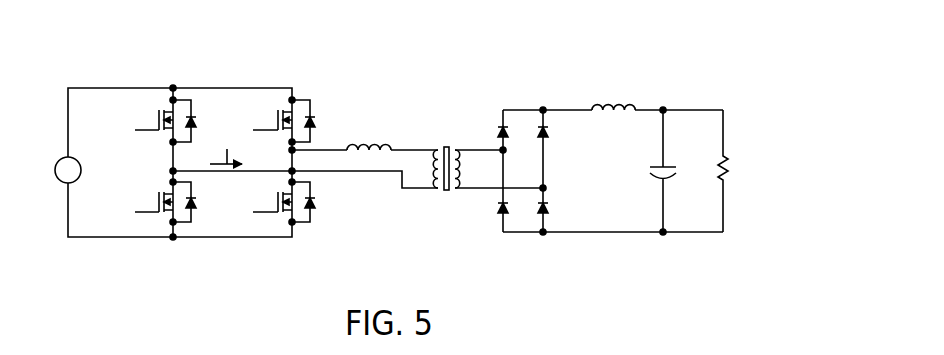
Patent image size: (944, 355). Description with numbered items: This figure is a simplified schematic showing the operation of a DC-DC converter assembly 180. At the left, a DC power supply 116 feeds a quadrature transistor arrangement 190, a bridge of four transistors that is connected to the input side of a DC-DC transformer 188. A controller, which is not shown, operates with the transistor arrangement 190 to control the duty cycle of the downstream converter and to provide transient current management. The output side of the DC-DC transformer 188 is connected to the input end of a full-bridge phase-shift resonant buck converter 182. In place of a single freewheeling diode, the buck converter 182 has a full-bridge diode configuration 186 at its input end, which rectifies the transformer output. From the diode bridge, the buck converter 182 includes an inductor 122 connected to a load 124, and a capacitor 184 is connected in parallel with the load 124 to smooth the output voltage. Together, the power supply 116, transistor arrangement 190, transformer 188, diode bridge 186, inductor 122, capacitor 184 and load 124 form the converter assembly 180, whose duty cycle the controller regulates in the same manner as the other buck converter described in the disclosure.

The power supply 116 is at (81, 160).
The quadrature transistor arrangement 190 is at (241, 68).
The DC-DC converter assembly 180 is at (501, 68).
The DC-DC transformer 188 is at (448, 138).
The full-bridge diode configuration 186 is at (567, 166).
The full-bridge phase-shift resonant buck converter 182 is at (713, 92).
The inductor 122 is at (637, 110).
The capacitor 184 is at (669, 163).
The load 124 is at (733, 178).